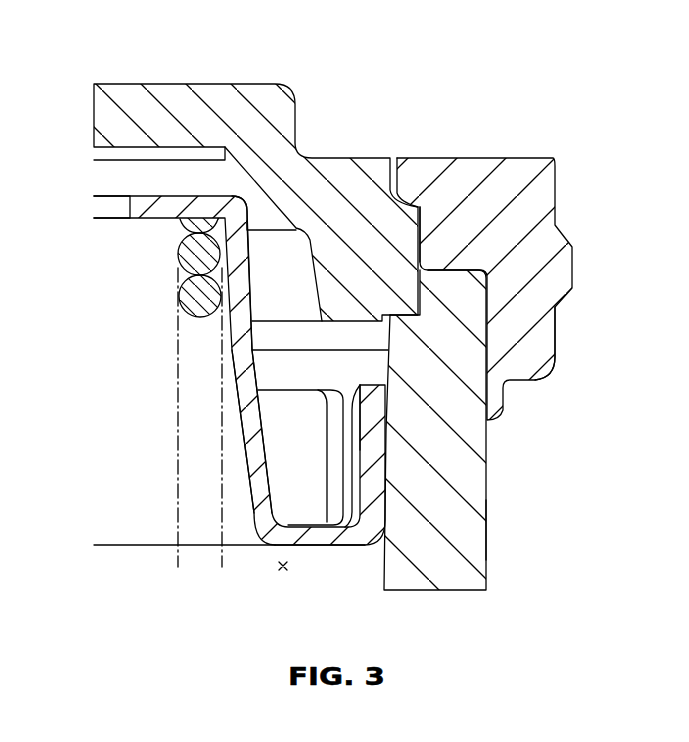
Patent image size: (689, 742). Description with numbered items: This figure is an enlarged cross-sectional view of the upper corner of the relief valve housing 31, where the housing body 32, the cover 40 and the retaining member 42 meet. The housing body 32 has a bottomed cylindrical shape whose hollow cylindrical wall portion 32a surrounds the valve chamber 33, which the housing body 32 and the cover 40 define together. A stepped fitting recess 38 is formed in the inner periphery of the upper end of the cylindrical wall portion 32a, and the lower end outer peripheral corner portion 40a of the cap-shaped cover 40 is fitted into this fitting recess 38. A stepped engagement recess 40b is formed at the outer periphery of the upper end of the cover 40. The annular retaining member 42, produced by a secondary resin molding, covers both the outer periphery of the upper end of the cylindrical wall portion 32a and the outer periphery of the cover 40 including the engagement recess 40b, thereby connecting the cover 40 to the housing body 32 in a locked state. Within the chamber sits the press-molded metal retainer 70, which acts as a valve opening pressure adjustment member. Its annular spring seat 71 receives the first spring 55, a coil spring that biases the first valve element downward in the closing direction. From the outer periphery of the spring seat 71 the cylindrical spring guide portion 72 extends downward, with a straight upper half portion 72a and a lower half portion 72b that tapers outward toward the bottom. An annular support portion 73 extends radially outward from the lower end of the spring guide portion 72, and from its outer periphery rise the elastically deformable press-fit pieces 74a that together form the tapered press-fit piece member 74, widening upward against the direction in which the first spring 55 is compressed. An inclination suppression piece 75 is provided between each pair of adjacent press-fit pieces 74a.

The housing 31 is at (570, 369).
The housing body 32 is at (492, 505).
The cylindrical wall portion 32a is at (477, 537).
The valve chamber 33 is at (270, 594).
The fitting recess 38 is at (402, 292).
The cover 40 is at (160, 82).
The lower end outer peripheral corner portion 40a is at (406, 318).
The engagement recess 40b is at (403, 188).
The retaining member 42 is at (477, 175).
The first spring 55 is at (198, 293).
The retainer 70 is at (186, 188).
The spring seat 71 is at (148, 207).
The spring guide portion 72 is at (252, 304).
The upper half portion 72a is at (240, 280).
The lower half portion 72b is at (252, 434).
The support portion 73 is at (312, 540).
The press-fit piece member 74 is at (390, 462).
The press-fit pieces 74a is at (373, 437).
The inclination suppression piece 75 is at (340, 477).